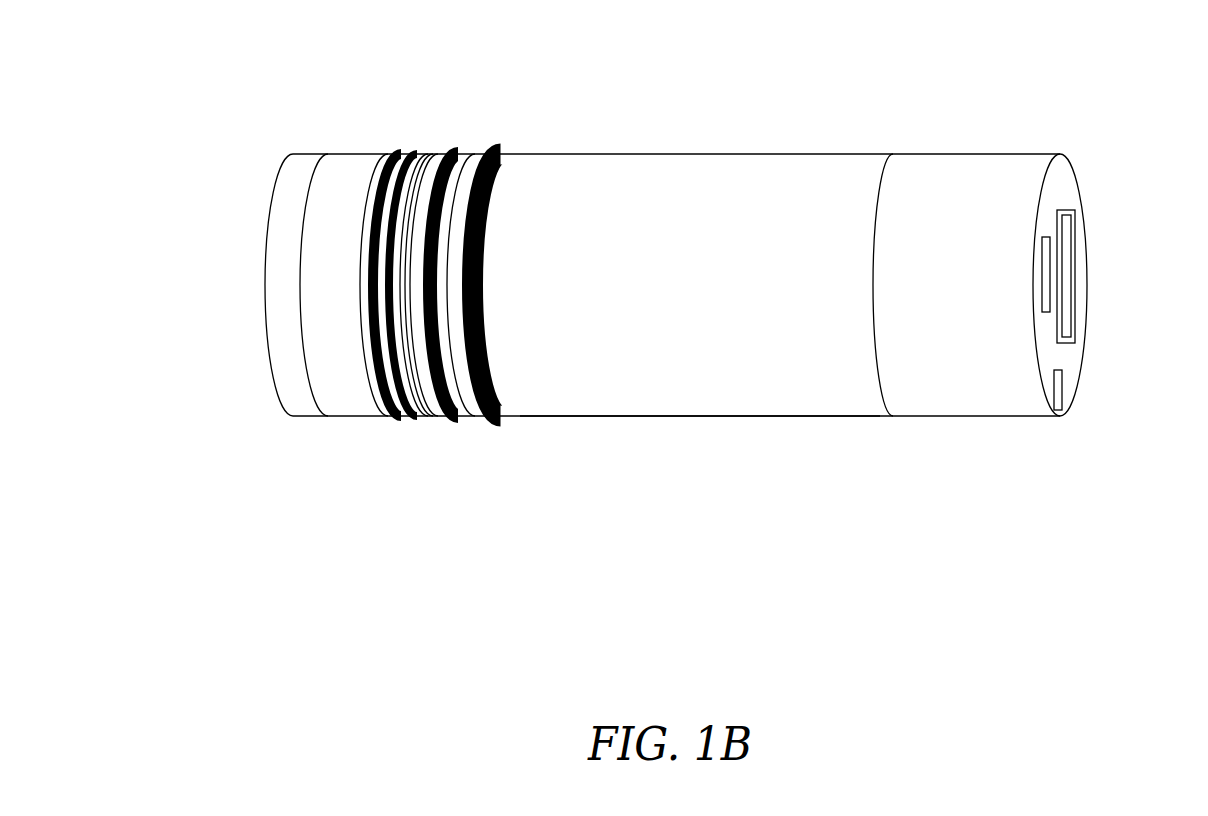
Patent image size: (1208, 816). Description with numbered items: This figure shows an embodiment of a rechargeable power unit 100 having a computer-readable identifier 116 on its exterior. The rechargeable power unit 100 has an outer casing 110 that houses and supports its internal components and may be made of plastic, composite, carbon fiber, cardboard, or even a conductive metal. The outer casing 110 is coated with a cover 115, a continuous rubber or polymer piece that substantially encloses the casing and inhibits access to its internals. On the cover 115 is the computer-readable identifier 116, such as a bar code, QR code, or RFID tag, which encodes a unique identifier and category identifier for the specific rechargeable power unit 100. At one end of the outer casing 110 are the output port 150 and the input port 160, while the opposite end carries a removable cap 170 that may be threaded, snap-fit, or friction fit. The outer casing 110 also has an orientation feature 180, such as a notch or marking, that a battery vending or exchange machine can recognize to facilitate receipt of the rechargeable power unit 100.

The rechargeable power unit 100 is at (628, 84).
The outer casing 110 is at (637, 420).
The cover 115 is at (582, 425).
The computer-readable identifier 116 is at (480, 314).
The output port 150 is at (1075, 223).
The input port 160 is at (1046, 290).
The cap 170 is at (279, 300).
The orientation feature 180 is at (1063, 388).